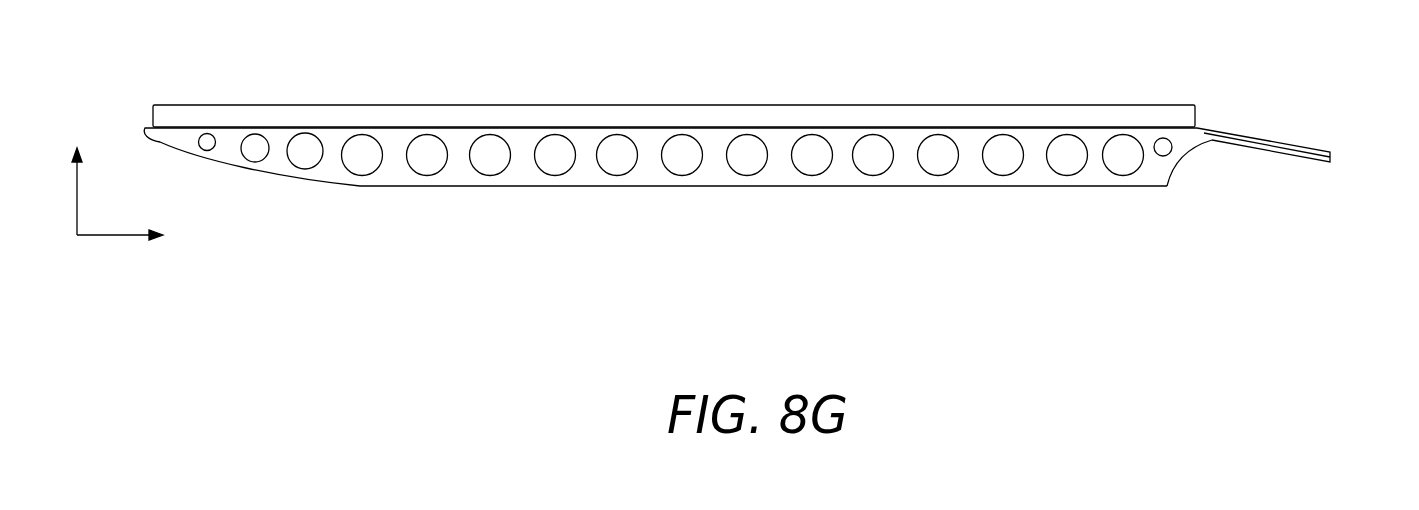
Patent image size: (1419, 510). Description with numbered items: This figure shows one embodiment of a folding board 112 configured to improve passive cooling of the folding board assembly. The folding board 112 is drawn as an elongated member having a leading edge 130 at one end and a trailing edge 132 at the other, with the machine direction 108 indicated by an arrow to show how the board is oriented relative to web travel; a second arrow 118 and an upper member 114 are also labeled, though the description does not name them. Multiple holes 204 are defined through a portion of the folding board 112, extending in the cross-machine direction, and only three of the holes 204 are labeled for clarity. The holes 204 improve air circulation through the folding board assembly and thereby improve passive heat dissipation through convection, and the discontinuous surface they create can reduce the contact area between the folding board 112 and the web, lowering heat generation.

The machine direction 108 is at (150, 237).
The folding board 112 is at (1200, 150).
The top plate 114 is at (499, 105).
The vertical axis / direction 118 is at (83, 172).
The leading edge 130 is at (272, 187).
The trailing edge 132 is at (1293, 130).
The holes 204 is at (938, 177).